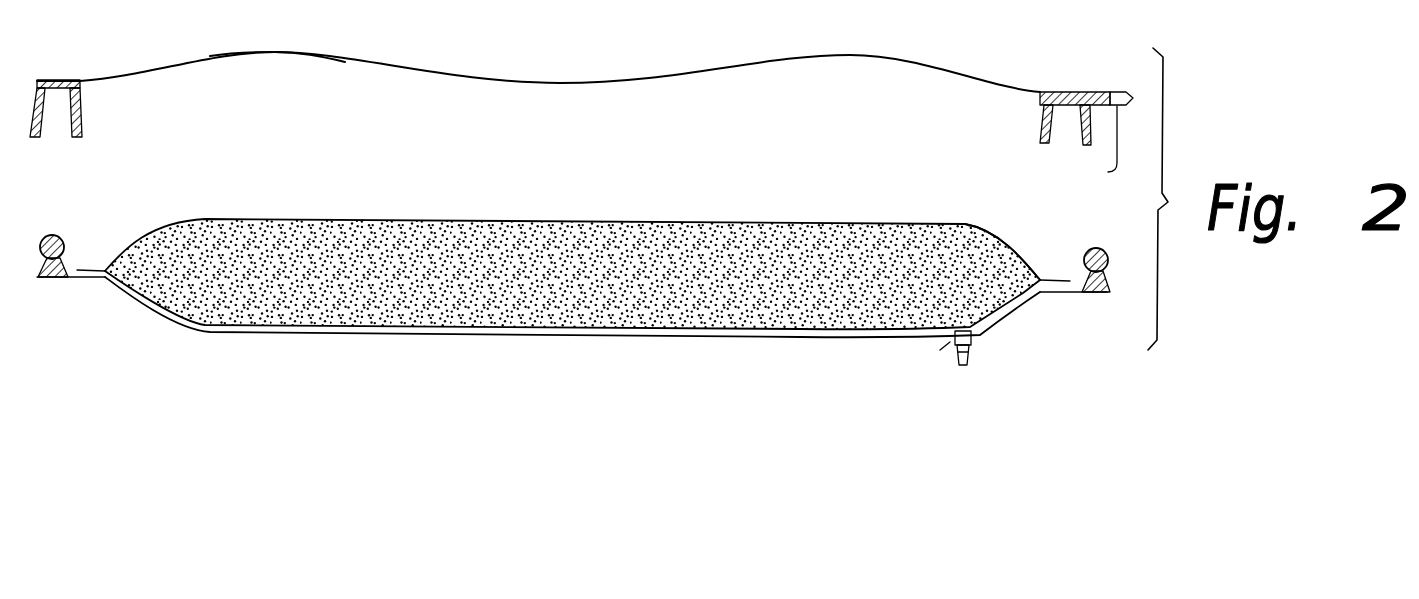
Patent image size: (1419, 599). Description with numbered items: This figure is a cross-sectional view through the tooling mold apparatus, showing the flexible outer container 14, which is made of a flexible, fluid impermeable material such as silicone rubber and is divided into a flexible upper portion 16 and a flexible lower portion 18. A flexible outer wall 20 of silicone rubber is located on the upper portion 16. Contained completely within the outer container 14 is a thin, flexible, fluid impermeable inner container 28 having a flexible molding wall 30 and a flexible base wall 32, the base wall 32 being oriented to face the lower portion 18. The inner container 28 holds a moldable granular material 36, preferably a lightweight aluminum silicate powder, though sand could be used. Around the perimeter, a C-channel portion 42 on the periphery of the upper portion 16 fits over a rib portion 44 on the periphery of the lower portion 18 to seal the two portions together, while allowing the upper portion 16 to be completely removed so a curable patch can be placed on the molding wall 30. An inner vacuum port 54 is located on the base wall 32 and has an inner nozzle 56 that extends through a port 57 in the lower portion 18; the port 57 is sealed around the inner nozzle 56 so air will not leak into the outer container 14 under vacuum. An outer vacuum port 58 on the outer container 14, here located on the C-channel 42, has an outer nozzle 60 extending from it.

The flexible outer container 14 is at (588, 205).
The flexible upper portion 16 is at (133, 76).
The flexible lower portion 18 is at (393, 336).
The flexible outer wall 20 is at (276, 52).
The inner container 28 is at (864, 222).
The flexible molding wall 30 is at (682, 222).
The flexible base wall 32 is at (645, 338).
The moldable granular material 36 is at (980, 250).
The C-channel portion 42 is at (82, 118).
The rib portion 44 is at (70, 240).
The inner vacuum port 54 is at (975, 336).
The inner nozzle 56 is at (965, 366).
The port 57 is at (940, 350).
The outer vacuum port 58 is at (1085, 92).
The outer nozzle 60 is at (1094, 148).